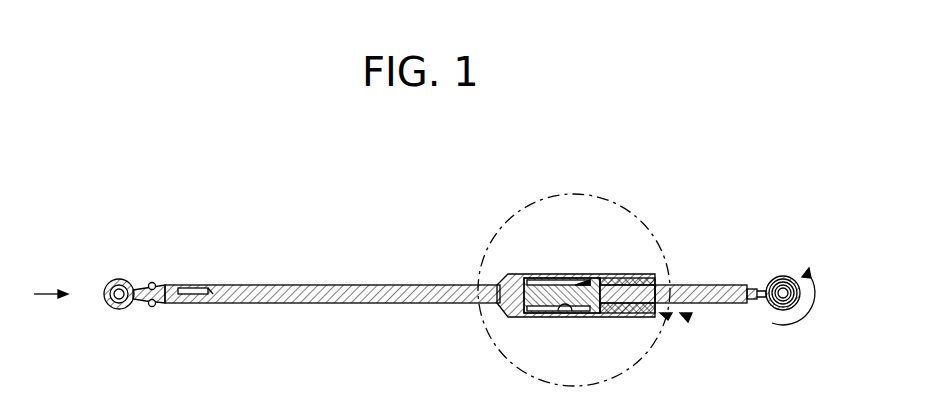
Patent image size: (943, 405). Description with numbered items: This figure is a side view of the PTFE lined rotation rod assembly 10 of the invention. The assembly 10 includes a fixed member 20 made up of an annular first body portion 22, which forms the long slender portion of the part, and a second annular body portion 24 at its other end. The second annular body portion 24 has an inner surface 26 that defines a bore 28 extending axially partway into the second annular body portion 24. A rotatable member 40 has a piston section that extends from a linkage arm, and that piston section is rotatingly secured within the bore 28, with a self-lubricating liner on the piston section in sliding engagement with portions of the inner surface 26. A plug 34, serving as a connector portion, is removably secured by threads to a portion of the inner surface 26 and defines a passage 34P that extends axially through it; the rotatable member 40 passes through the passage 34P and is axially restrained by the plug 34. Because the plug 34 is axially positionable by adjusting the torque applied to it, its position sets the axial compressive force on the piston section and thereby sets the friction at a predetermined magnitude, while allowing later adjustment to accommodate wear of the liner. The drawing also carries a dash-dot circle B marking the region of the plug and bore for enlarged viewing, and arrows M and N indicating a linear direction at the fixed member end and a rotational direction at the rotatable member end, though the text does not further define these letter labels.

The PTFE lined rotation rod assembly 10 is at (428, 182).
The fixed member 20 is at (659, 325).
The annular first body portion 22 is at (283, 283).
The second annular body portion 24 is at (540, 276).
The inner surface 26 is at (566, 318).
The bore 28 is at (588, 282).
The plug 34 is at (650, 275).
The passage 34P is at (667, 320).
The rotatable member 40 is at (688, 318).
The enlarged region B is at (655, 232).
The direction M is at (55, 292).
The rotation direction N is at (810, 322).